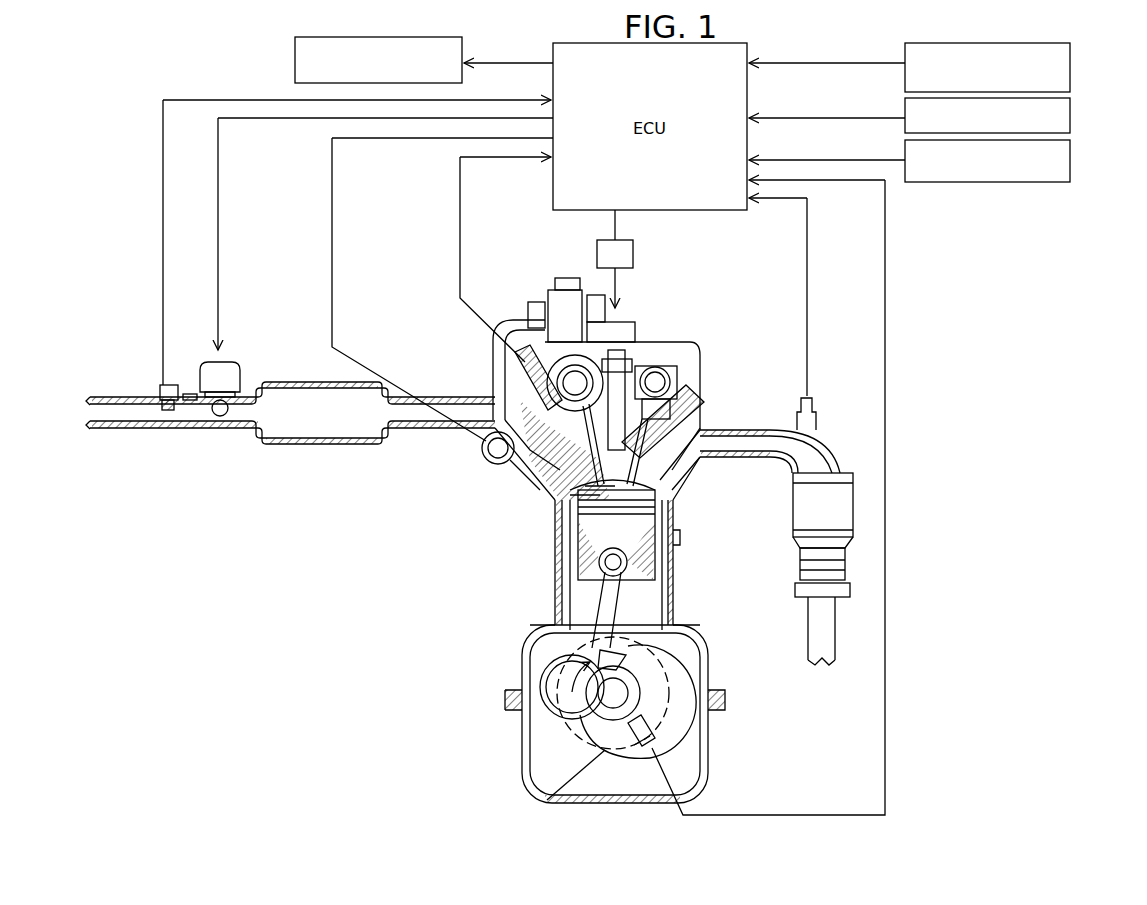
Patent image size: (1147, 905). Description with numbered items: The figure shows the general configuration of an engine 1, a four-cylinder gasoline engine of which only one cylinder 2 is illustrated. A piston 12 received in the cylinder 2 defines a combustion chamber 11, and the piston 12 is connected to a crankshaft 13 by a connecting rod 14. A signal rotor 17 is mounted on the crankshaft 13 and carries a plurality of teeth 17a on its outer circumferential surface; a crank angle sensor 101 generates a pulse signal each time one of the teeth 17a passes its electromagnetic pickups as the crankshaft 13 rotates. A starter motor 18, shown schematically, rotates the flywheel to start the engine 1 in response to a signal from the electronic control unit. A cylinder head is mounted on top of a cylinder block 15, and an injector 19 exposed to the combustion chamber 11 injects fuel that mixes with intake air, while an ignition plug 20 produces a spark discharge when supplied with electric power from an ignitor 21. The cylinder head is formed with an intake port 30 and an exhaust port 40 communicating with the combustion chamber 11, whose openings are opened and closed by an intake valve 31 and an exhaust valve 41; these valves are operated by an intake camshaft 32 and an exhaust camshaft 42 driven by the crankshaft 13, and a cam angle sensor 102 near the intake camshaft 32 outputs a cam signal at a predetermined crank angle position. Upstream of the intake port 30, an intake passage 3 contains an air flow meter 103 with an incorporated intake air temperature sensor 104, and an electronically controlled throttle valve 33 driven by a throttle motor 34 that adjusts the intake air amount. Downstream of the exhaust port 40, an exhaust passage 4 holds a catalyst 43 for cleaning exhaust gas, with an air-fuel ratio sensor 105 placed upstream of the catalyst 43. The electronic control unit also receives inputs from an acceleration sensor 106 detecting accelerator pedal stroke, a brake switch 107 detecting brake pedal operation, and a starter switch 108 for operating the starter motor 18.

The engine 1 is at (403, 607).
The cylinder 2 is at (660, 612).
The intake passage 3 is at (415, 430).
The exhaust passage 4 is at (745, 452).
The combustion chamber 11 is at (675, 522).
The piston 12 is at (555, 580).
The crankshaft 13 is at (545, 800).
The connecting rod 14 is at (555, 610).
The cylinder block 15 is at (675, 563).
The signal rotor 17 is at (592, 740).
The teeth 17a is at (700, 700).
The starter motor 18 is at (292, 63).
The injector 19 is at (520, 478).
The ignition plug 20 is at (598, 438).
The ignitor 21 is at (635, 252).
The intake port 30 is at (490, 402).
The intake valve 31 is at (553, 518).
The intake camshaft 32 is at (556, 290).
The throttle valve 33 is at (228, 414).
The throttle motor 34 is at (242, 378).
The exhaust port 40 is at (708, 418).
The exhaust valve 41 is at (675, 460).
The exhaust camshaft 42 is at (672, 353).
The catalyst 43 is at (795, 520).
The crank angle sensor 101 is at (655, 746).
The cam angle sensor 102 is at (508, 330).
The air flow meter 103 is at (160, 388).
The intake air temperature sensor 104 is at (190, 394).
The air-fuel ratio sensor 105 is at (815, 412).
The acceleration sensor 106 is at (1072, 63).
The brake switch 107 is at (1072, 118).
The starter switch 108 is at (1072, 160).